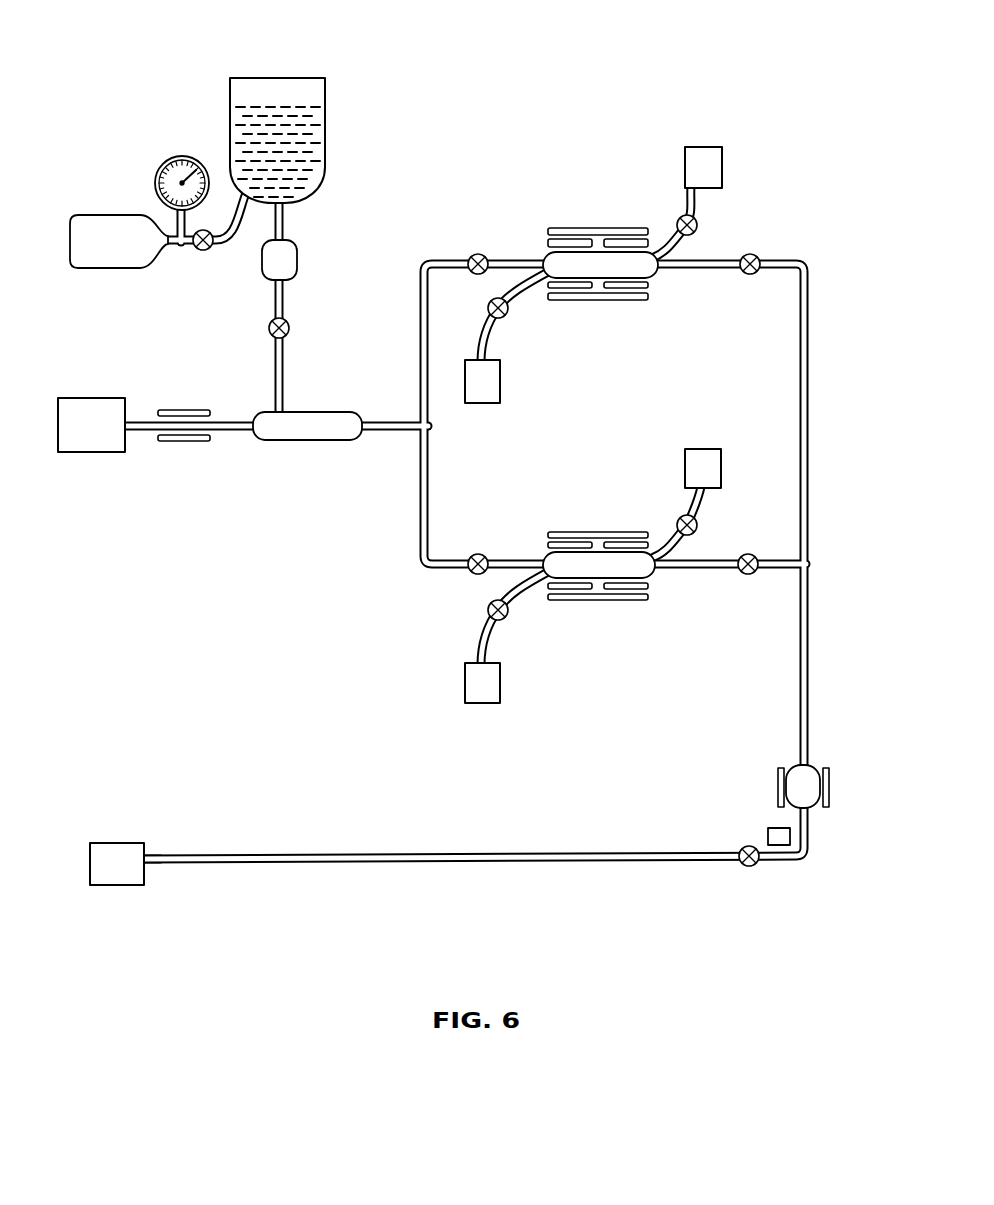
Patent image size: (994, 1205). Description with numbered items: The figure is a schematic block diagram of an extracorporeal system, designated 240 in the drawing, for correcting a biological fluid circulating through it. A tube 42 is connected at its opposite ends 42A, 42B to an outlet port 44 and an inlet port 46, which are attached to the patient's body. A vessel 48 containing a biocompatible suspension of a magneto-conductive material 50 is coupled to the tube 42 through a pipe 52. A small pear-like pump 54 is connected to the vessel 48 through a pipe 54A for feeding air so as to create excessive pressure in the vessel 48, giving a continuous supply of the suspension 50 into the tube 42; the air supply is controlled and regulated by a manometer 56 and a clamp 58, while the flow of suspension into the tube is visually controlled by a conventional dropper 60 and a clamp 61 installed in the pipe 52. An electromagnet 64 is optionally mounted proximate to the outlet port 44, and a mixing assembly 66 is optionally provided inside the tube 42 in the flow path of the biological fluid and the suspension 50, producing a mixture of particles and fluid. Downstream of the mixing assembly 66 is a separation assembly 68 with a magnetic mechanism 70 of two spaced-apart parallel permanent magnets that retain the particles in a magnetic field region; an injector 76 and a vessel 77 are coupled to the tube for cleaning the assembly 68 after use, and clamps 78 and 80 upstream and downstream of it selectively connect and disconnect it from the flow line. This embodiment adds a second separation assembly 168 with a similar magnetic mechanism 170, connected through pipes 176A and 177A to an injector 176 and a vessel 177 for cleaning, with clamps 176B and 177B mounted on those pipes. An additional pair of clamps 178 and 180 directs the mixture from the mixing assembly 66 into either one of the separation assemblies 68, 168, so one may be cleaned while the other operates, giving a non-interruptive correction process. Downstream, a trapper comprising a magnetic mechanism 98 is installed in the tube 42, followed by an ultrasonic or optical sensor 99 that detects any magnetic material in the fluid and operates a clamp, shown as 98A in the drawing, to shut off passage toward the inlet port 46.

The fluid circuit system 240 is at (518, 92).
The tube 42 is at (806, 259).
The tube end 42A is at (132, 431).
The tube end 42B is at (157, 863).
The outlet port 44 is at (93, 397).
The inlet port 46 is at (127, 842).
The vessel 48 is at (326, 80).
The magneto-conductive material suspension 50 is at (292, 150).
The pipe 52 is at (285, 226).
The pear-like pump 54 is at (113, 227).
The pipe 54A is at (173, 246).
The manometer 56 is at (179, 156).
The clamp 58 is at (205, 250).
The dropper 60 is at (297, 262).
The clamp 61 is at (290, 328).
The electromagnet 64 is at (185, 442).
The mixing assembly 66 is at (363, 407).
The separation assembly 68 is at (535, 245).
The magnetic mechanism 70 is at (612, 210).
The injector 76 is at (692, 146).
The vessel 77 is at (485, 404).
The clamp 78 is at (470, 255).
The clamp 80 is at (745, 254).
The magnetic mechanism 98 is at (827, 756).
The valve 98A is at (749, 867).
The sensor 99 is at (767, 836).
The separation assembly 168 is at (498, 578).
The magnetic mechanism 170 is at (642, 617).
The injector 176 is at (697, 448).
The pipe 176A is at (705, 500).
The clamp 176B is at (678, 514).
The vessel 177 is at (465, 682).
The pipe 177A is at (523, 594).
The clamp 177B is at (508, 622).
The clamp 178 is at (470, 572).
The clamp 180 is at (745, 575).